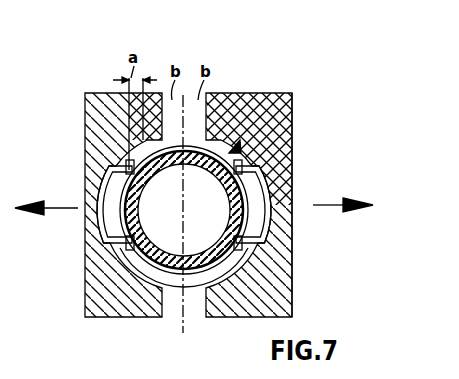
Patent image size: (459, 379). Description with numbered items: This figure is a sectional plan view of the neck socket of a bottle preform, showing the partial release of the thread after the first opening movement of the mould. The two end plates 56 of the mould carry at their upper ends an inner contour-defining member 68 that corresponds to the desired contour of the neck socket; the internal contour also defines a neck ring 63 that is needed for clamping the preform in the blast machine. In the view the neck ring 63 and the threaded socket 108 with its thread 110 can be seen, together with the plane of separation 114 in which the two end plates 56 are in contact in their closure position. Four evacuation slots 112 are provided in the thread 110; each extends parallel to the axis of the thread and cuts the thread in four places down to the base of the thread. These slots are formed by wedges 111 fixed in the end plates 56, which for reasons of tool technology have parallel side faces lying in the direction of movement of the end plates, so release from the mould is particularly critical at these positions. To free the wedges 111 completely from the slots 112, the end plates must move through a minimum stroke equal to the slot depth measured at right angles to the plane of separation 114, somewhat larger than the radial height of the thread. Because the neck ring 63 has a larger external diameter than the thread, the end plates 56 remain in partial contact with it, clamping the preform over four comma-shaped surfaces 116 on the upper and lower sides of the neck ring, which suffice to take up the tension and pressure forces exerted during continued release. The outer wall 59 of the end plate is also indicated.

The end plate 56 is at (228, 102).
The outer wall of housing 59 is at (290, 112).
The neck ring 63 is at (257, 218).
The inner contour-defining member 68 is at (271, 188).
The threaded socket 108 is at (137, 284).
The thread 110 is at (175, 272).
The wedge 111 is at (126, 167).
The evacuation slot 112 is at (92, 128).
The plane of separation 114 is at (183, 347).
The comma-shaped surface 116 is at (96, 94).